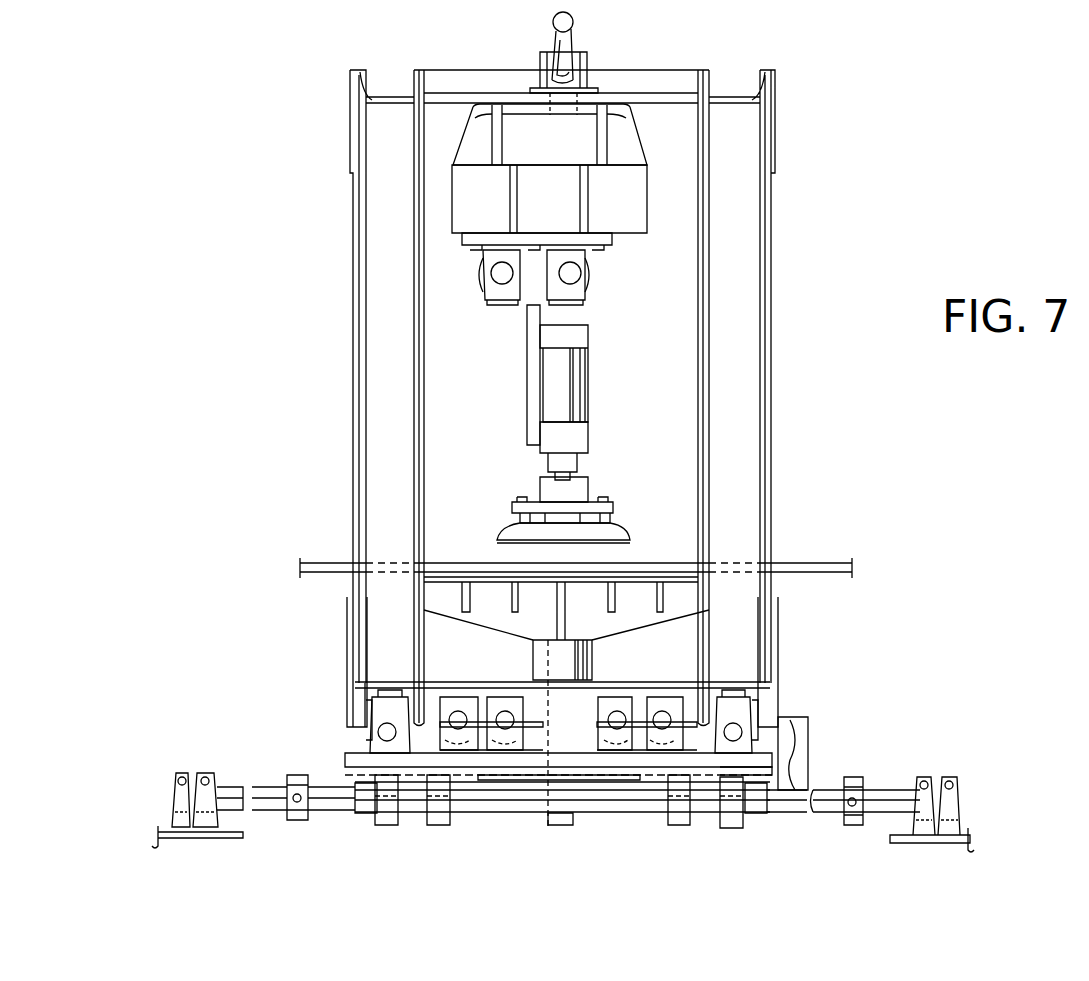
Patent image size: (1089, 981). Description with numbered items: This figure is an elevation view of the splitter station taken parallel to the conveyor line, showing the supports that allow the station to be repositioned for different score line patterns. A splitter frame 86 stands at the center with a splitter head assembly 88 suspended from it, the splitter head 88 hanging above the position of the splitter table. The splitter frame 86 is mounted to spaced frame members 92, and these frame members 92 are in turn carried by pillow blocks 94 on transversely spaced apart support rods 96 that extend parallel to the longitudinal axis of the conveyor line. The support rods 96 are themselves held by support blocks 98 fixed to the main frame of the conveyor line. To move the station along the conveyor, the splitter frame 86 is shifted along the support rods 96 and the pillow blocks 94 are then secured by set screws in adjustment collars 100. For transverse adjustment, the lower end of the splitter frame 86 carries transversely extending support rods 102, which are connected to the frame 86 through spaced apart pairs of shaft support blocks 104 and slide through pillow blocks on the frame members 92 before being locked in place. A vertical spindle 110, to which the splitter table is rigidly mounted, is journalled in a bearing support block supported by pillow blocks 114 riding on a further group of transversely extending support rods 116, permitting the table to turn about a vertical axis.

The splitter frame 86 is at (772, 352).
The splitter head assembly 88 is at (655, 197).
The frame members 92 is at (768, 763).
The pillow blocks 94 is at (748, 828).
The support rods 96 is at (886, 778).
The support blocks 98 is at (950, 795).
The adjustment collars 100 is at (297, 805).
The transversely extending support rods 102 is at (363, 745).
The shaft support blocks 104 is at (745, 743).
The vertical spindle 110 is at (597, 658).
The bearing block 114 is at (482, 707).
The transversely extending support rods 116 is at (455, 725).